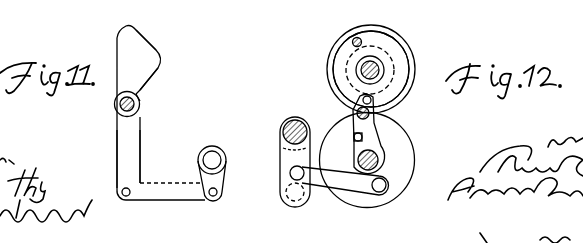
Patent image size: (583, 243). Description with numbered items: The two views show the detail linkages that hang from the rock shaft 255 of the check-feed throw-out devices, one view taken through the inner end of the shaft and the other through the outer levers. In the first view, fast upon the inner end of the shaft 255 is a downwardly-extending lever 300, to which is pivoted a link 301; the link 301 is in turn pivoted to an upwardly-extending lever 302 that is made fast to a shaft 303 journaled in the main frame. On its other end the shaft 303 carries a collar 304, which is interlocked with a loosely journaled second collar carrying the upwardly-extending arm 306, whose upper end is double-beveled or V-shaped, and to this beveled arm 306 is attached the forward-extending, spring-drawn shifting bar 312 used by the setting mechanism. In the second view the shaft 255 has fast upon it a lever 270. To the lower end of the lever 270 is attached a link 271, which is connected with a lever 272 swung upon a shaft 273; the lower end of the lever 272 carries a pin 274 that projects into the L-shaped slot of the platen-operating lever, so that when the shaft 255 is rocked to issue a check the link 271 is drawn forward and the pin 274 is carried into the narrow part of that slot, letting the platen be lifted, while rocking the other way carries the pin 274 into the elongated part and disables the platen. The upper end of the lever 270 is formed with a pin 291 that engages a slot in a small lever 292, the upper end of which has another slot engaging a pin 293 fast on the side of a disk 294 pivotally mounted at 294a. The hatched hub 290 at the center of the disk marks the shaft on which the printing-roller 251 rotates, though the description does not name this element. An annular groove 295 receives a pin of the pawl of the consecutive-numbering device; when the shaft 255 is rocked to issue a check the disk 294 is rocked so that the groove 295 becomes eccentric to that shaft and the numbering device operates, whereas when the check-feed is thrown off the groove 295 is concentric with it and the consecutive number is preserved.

In FIG. 11, the downwardly-extending lever 300 is at (223, 177).
In FIG. 11, the upwardly-extending arm 306 is at (145, 63).
In FIG. 11, the shifting bar 312 is at (143, 85).
In FIG. 11, the shaft 303 is at (134, 107).
In FIG. 11, the collar 304 is at (120, 112).
In FIG. 11, the lever 302 is at (137, 142).
In FIG. 11, the link 301 is at (172, 197).
In FIG. 11, the shaft 255 is at (210, 162).
In FIG. 12, the shaft 255 is at (380, 160).
In FIG. 12, the printing-roller 251 is at (330, 62).
In FIG. 12, the disk 294 is at (392, 43).
In FIG. 12, the pivot of disk 294a is at (370, 24).
In FIG. 12, the annular groove 295 is at (390, 57).
In FIG. 12, the hub shaft 290 is at (361, 72).
In FIG. 12, the pin 293 is at (373, 99).
In FIG. 12, the small lever 292 is at (363, 125).
In FIG. 12, the pin 291 is at (352, 135).
In FIG. 12, the lever 270 is at (389, 183).
In FIG. 12, the shaft 273 is at (291, 126).
In FIG. 12, the pin 274 is at (293, 203).
In FIG. 12, the lever 272 is at (290, 172).
In FIG. 12, the link 271 is at (350, 182).